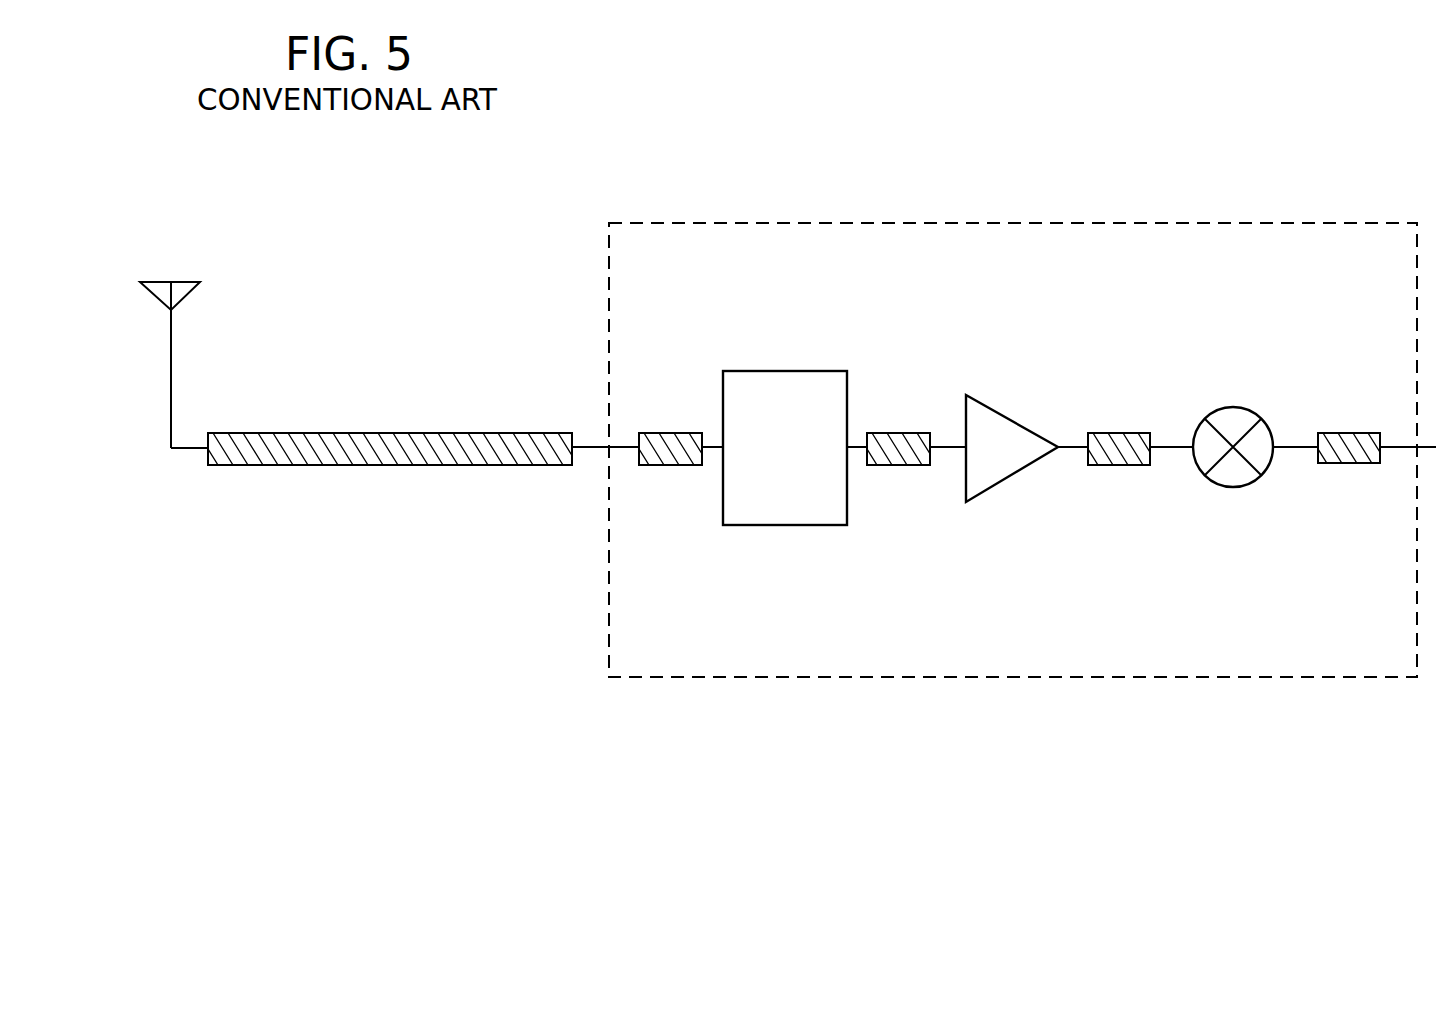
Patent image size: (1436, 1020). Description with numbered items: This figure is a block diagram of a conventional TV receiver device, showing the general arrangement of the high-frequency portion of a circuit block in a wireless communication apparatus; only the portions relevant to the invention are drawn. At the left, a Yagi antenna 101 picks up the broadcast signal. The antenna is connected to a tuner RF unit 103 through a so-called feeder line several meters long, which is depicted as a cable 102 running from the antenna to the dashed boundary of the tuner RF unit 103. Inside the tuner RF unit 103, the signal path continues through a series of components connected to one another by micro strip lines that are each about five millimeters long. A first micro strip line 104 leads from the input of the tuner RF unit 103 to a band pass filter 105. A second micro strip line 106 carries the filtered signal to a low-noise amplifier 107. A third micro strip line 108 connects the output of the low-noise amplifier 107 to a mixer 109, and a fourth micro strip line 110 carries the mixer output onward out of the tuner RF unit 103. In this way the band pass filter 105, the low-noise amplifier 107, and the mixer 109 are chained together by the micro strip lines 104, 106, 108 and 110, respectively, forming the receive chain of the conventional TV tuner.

The Yagi antenna 101 is at (185, 282).
The cable 102 is at (387, 432).
The tuner RF unit 103 is at (1049, 222).
The micro strip line 104 is at (667, 432).
The band pass filter 105 is at (783, 371).
The micro strip line 106 is at (895, 432).
The low-noise amplifier 107 is at (988, 418).
The micro strip line 108 is at (1117, 432).
The mixer 109 is at (1232, 408).
The micro strip line 110 is at (1346, 432).